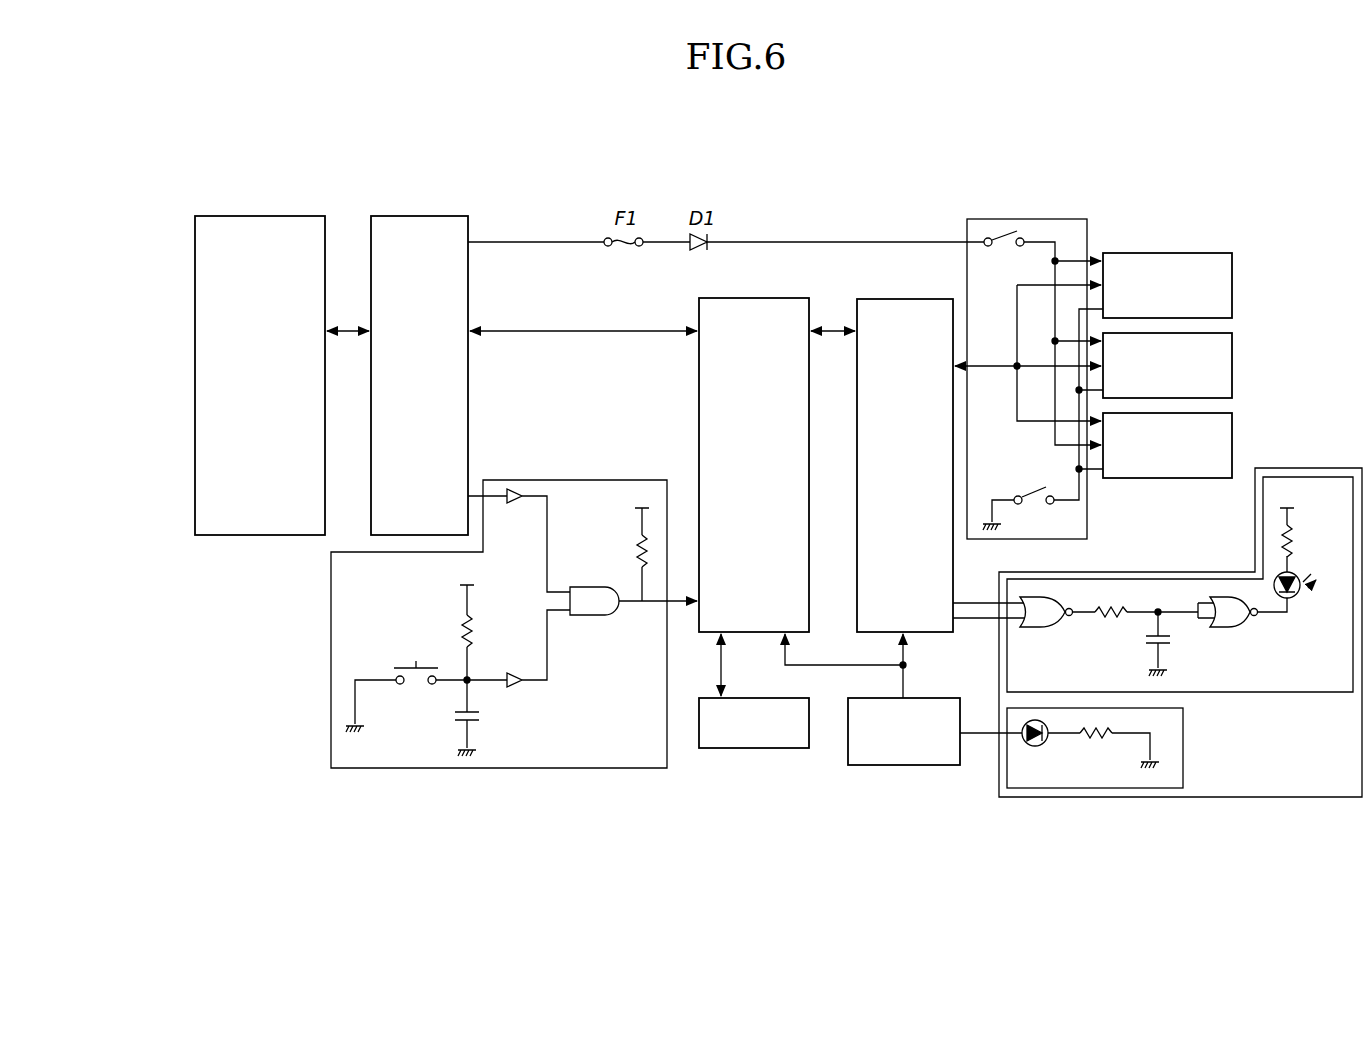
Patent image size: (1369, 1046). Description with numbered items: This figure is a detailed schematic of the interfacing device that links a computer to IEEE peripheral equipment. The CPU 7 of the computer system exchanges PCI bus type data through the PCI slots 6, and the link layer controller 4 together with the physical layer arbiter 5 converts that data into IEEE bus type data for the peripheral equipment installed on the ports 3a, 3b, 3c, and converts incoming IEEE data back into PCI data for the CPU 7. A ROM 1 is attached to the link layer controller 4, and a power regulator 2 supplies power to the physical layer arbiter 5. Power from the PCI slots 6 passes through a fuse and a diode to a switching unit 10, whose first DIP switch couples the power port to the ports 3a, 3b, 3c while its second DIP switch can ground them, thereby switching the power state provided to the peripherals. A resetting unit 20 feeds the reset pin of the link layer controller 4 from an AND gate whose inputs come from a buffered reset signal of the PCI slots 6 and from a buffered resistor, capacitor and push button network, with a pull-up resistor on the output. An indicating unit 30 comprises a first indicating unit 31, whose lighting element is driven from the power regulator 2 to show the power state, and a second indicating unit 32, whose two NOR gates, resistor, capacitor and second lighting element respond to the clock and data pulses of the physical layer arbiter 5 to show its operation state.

The ROM 1 is at (752, 748).
The power regulator 2 is at (904, 765).
The 1394 port 3a is at (1232, 283).
The 1394 port 3b is at (1232, 364).
The 1394 port 3c is at (1232, 445).
The link layer controller 4 is at (699, 390).
The physical layer arbiter 5 is at (857, 392).
The PCI slots 6 is at (418, 216).
The CPU 7 is at (261, 216).
The switching unit 10 is at (1025, 219).
The resetting unit 20 is at (573, 480).
The indicating unit 30 is at (1190, 572).
The first indicating unit 31 is at (1183, 750).
The second indicating unit 32 is at (1143, 579).